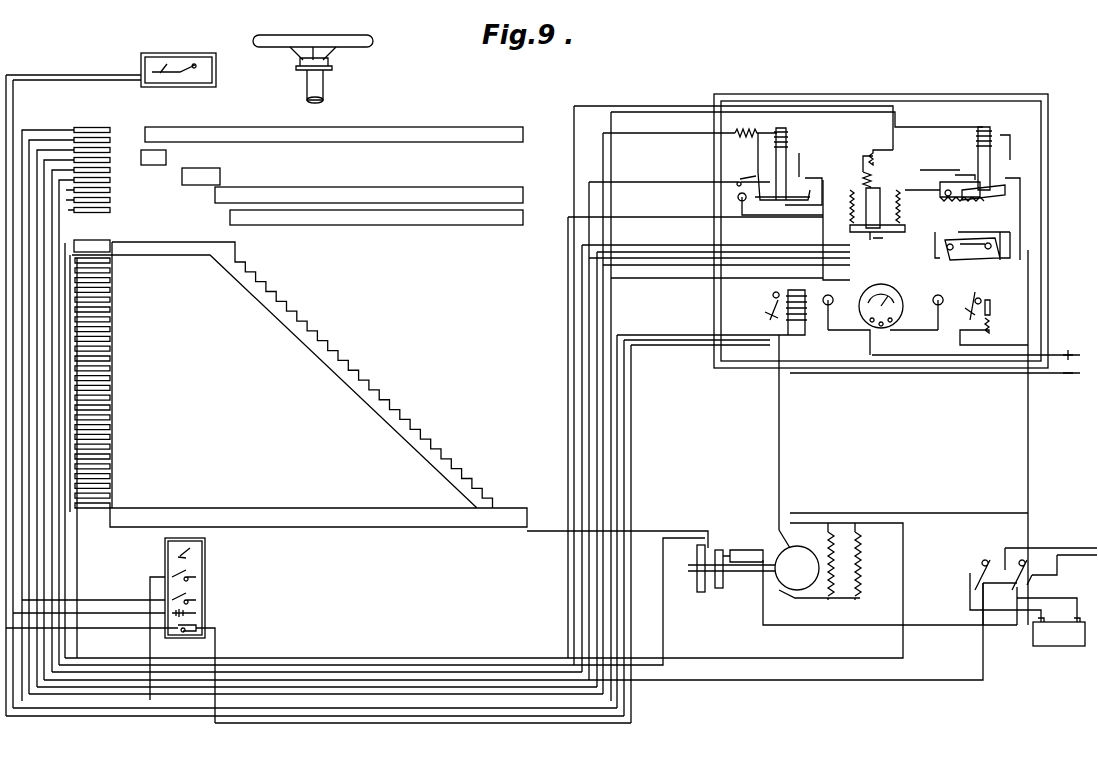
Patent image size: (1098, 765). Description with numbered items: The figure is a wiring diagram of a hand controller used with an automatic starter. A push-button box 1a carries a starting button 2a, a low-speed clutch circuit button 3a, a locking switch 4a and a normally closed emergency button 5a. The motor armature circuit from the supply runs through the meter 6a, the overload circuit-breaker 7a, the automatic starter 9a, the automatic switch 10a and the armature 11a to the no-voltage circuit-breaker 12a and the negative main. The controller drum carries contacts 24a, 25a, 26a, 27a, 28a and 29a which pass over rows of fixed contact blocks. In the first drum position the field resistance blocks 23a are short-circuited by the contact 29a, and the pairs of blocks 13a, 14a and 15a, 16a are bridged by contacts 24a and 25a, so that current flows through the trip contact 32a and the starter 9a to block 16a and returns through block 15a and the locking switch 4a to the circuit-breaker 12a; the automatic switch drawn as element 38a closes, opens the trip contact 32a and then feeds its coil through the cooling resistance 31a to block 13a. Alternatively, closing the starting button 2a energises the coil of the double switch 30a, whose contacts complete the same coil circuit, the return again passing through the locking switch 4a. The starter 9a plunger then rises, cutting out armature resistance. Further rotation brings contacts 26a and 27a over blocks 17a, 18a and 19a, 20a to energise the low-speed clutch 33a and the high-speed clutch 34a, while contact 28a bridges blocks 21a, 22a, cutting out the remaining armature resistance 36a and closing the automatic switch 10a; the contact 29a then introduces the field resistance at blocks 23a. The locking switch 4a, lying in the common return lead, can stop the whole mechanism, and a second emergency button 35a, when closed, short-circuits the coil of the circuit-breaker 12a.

The push-button box 1a is at (198, 552).
The starting button 2a is at (196, 574).
The low-speed clutch circuit button 3a is at (196, 597).
The locking switch 4a is at (196, 613).
The emergency button 5a is at (196, 627).
The meter 6a is at (935, 328).
The overload circuit-breaker 7a is at (994, 311).
The automatic starter 9a is at (890, 185).
The automatic switch 10a is at (975, 178).
The armature 11a is at (895, 569).
The no-voltage circuit-breaker 12a is at (786, 403).
The fixed contact block 13a is at (110, 130).
The fixed contact block 14a is at (110, 140).
The fixed contact block 15a is at (110, 150).
The fixed contact block 16a is at (110, 160).
The fixed contact block 17a is at (110, 170).
The fixed contact block 18a is at (110, 180).
The fixed contact block 19a is at (110, 190).
The fixed contact block 20a is at (110, 200).
The fixed contact block 21a is at (110, 210).
The fixed contact block 22a is at (92, 240).
The fixed contact blocks of the field resistance 23a is at (114, 368).
The controller contact 24a is at (334, 135).
The controller contact 25a is at (154, 158).
The controller contact 26a is at (201, 177).
The controller contact 27a is at (369, 195).
The controller contact 28a is at (376, 218).
The controller contact 29a is at (170, 243).
The double switch 30a is at (972, 237).
The cooling resistance 31a is at (756, 142).
The trip contact 32a is at (778, 188).
The low-speed clutch 33a is at (719, 588).
The high-speed clutch 34a is at (700, 592).
The emergency button 35a is at (197, 63).
The armature resistance 36a is at (988, 178).
The relay 38a is at (786, 150).